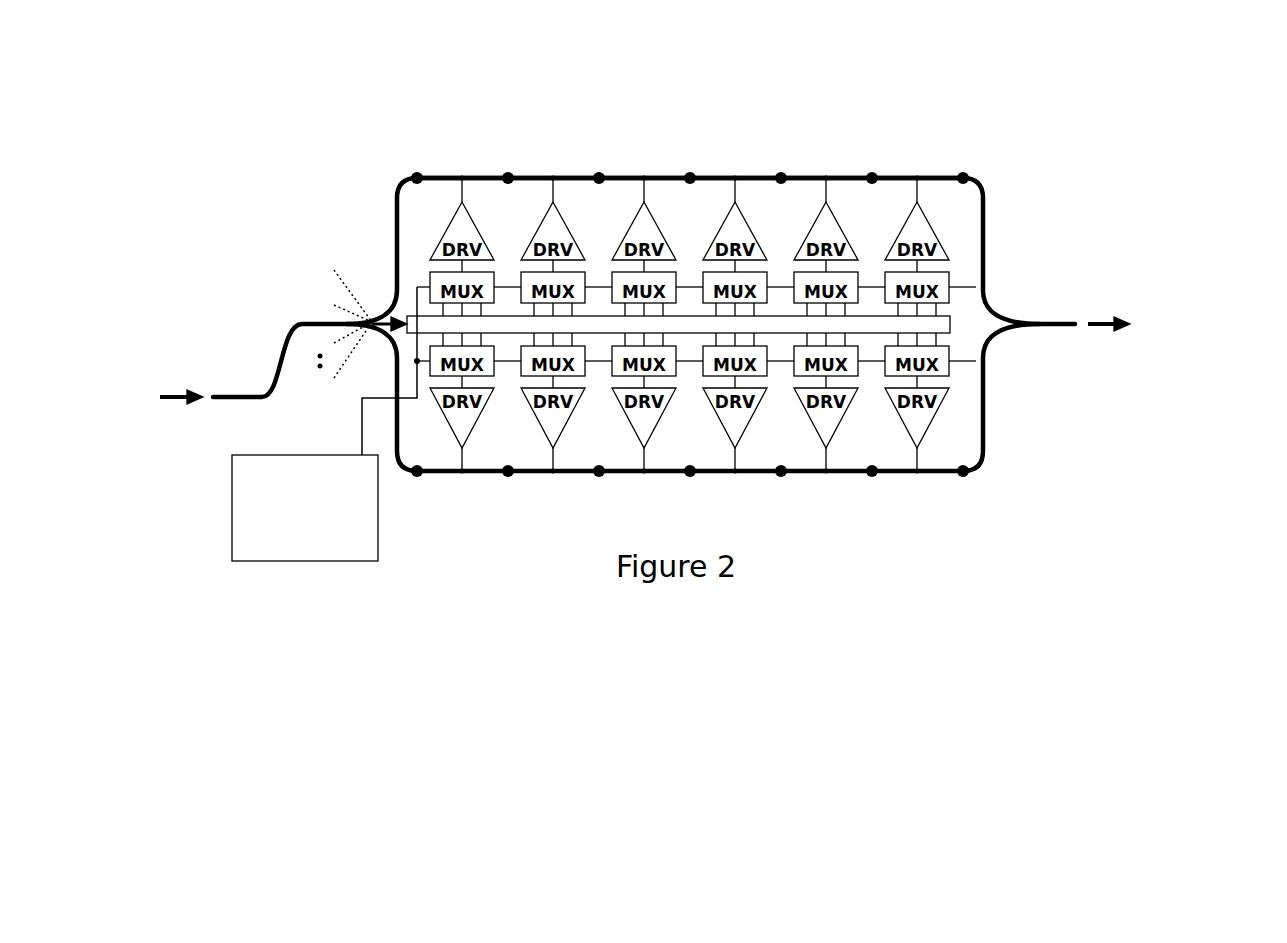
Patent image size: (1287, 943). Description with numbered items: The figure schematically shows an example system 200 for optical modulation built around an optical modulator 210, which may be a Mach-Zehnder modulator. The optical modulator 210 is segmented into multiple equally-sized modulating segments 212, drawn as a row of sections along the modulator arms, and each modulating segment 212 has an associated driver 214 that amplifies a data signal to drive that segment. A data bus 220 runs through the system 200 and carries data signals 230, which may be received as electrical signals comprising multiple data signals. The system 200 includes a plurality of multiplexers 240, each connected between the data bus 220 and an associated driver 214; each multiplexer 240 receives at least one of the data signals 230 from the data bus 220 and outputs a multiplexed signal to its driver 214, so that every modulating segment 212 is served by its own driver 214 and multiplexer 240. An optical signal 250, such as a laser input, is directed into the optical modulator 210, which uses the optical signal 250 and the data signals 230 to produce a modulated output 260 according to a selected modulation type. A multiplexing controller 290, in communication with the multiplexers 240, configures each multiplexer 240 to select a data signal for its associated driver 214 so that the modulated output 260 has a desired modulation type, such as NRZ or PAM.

The system 200 is at (824, 132).
The optical modulator 210 is at (963, 136).
The modulating segment 212 is at (481, 156).
The driver 214 is at (933, 232).
The data bus 220 is at (930, 322).
The data signals 230 is at (306, 245).
The multiplexer 240 is at (428, 272).
The optical signal 250 is at (235, 378).
The modulated output 260 is at (1133, 280).
The multiplexing controller 290 is at (363, 481).